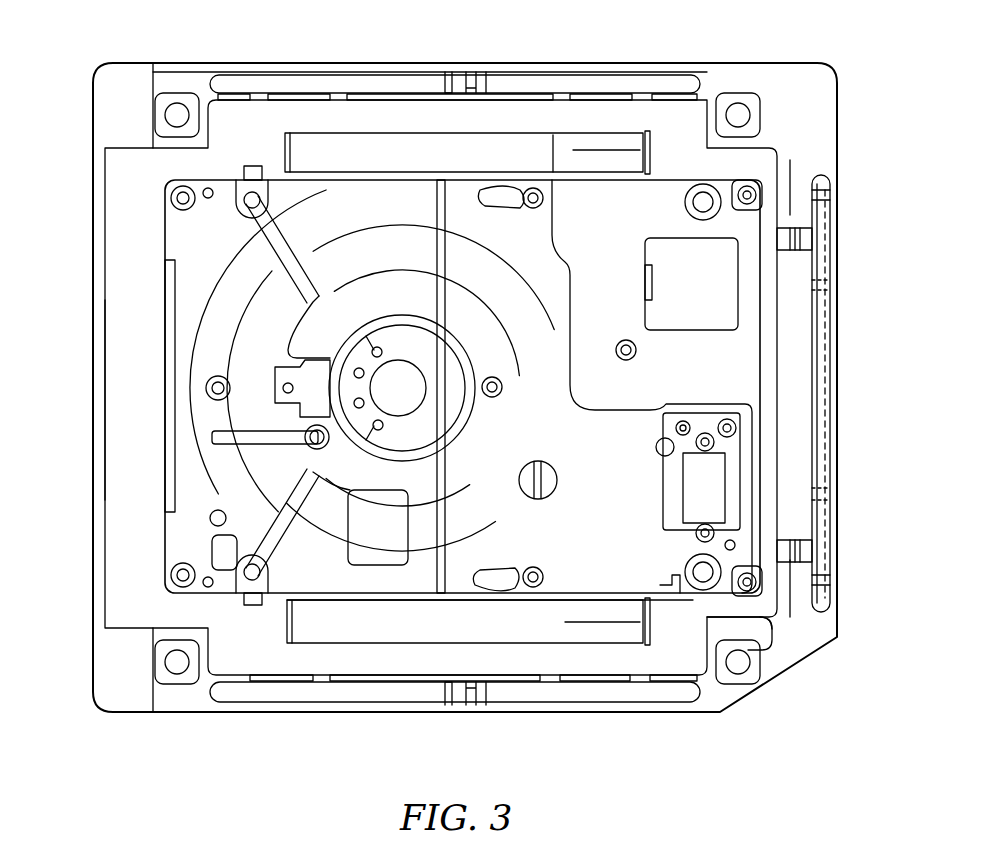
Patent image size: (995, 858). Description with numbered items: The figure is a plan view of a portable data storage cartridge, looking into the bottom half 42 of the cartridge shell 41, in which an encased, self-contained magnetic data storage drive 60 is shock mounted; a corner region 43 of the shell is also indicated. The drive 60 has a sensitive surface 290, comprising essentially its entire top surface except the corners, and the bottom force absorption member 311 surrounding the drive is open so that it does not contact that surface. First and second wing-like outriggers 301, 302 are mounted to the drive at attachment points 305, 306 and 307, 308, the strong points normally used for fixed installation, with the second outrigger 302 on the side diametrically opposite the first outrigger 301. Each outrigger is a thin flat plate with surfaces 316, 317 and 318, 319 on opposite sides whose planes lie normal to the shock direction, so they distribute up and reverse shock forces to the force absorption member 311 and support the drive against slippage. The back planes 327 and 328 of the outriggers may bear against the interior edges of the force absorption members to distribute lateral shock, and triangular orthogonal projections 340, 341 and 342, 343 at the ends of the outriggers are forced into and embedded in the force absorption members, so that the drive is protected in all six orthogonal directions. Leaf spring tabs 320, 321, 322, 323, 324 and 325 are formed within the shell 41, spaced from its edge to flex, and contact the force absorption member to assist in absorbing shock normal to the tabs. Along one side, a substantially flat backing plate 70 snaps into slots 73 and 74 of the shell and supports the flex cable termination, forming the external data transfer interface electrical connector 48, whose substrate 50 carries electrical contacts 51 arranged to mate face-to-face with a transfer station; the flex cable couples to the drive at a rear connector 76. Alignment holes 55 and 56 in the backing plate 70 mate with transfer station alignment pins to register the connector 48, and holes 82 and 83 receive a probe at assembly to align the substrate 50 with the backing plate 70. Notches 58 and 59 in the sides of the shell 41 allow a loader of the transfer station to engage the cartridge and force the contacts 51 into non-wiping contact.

The cartridge shell 41 is at (92, 122).
The bottom half of the cartridge shell 42 is at (104, 400).
The housing corner 43 is at (787, 633).
The external data transfer interface electrical connector 48 is at (838, 348).
The substrate 50 is at (836, 462).
The electrical contacts 51 is at (838, 390).
The alignment hole 55 is at (835, 590).
The alignment hole 56 is at (835, 200).
The notch 58 is at (460, 704).
The notch 59 is at (462, 70).
The magnetic data storage drive 60 is at (185, 184).
The backing plate 70 is at (790, 360).
The slot 73 is at (835, 248).
The slot 74 is at (836, 545).
The connector 76 is at (166, 432).
The hole 82 is at (838, 290).
The hole 83 is at (838, 512).
The sensitive surface 290 is at (446, 412).
The first wing-like outrigger 301 is at (505, 646).
The second wing-like outrigger 302 is at (553, 133).
The attachment point 305 is at (262, 615).
The attachment point 306 is at (673, 575).
The attachment point 307 is at (255, 172).
The attachment point 308 is at (690, 205).
The bottom force absorption member 311 is at (210, 690).
The outrigger surface 316 is at (565, 622).
The outrigger surface 317 is at (553, 646).
The outrigger surface 318 is at (576, 160).
The outrigger surface 319 is at (505, 133).
The leaf spring tab 320 is at (300, 682).
The leaf spring tab 321 is at (392, 682).
The leaf spring tab 322 is at (618, 682).
The leaf spring tab 323 is at (300, 94).
The leaf spring tab 324 is at (390, 94).
The leaf spring tab 325 is at (618, 94).
The back plane surface 327 is at (480, 612).
The back plane surface 328 is at (506, 192).
The orthogonal projection 340 is at (270, 642).
The orthogonal projection 341 is at (655, 645).
The orthogonal projection 342 is at (274, 140).
The orthogonal projection 343 is at (652, 140).